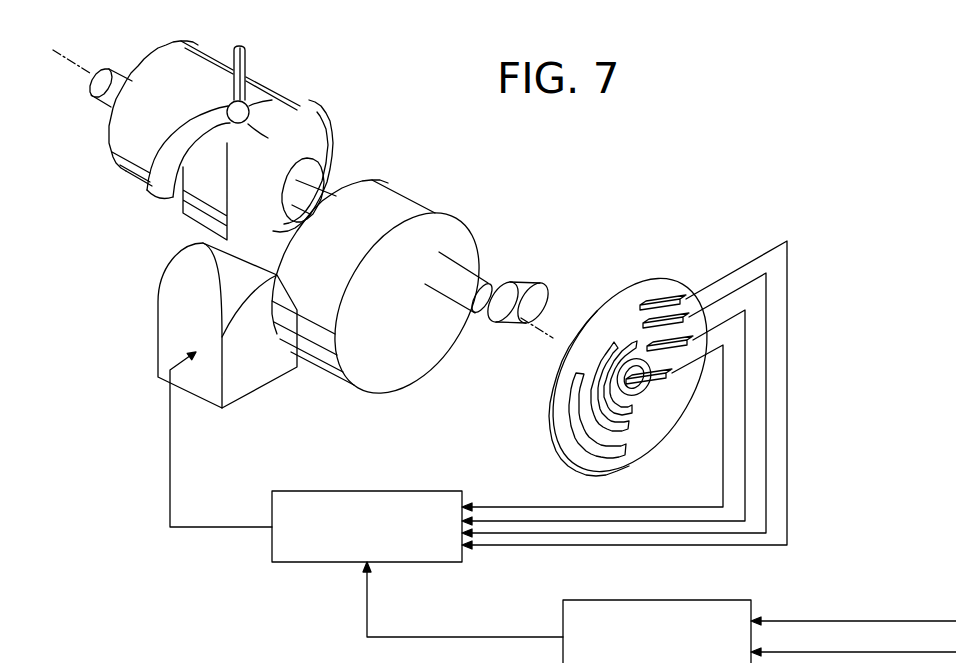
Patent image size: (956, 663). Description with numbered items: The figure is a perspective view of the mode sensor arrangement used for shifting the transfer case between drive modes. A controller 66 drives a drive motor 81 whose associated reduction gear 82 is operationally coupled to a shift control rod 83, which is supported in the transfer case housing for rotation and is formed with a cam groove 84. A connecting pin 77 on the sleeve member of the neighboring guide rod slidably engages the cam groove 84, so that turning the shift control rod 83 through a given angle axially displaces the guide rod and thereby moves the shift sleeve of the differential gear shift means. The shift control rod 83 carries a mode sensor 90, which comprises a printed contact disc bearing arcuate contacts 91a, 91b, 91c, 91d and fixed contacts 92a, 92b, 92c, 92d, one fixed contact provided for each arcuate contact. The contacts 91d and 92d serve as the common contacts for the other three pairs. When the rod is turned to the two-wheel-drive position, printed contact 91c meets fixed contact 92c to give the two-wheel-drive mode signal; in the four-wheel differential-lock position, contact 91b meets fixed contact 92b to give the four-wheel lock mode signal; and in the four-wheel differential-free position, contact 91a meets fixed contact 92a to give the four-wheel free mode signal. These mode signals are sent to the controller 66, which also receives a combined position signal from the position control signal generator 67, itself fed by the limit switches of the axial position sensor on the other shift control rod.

The controller 66 is at (283, 563).
The position control signal generator 67 is at (737, 600).
The connecting pin 77 is at (250, 76).
The drive motor 81 is at (168, 327).
The reduction gear 82 is at (402, 202).
The shift control rod 83 is at (162, 72).
The cam groove 84 is at (153, 192).
The mode sensor 90 is at (635, 270).
The arcuate contact 91a is at (575, 443).
The arcuate contact 91b is at (612, 340).
The arcuate contact 91c is at (637, 340).
The arcuate contact 91d is at (630, 396).
The fixed contact 92a is at (657, 300).
The fixed contact 92b is at (667, 315).
The fixed contact 92c is at (683, 347).
The fixed contact 92d is at (640, 385).